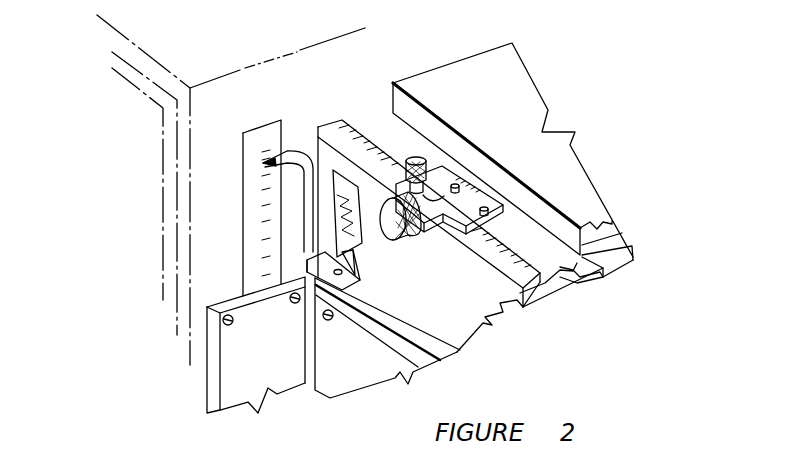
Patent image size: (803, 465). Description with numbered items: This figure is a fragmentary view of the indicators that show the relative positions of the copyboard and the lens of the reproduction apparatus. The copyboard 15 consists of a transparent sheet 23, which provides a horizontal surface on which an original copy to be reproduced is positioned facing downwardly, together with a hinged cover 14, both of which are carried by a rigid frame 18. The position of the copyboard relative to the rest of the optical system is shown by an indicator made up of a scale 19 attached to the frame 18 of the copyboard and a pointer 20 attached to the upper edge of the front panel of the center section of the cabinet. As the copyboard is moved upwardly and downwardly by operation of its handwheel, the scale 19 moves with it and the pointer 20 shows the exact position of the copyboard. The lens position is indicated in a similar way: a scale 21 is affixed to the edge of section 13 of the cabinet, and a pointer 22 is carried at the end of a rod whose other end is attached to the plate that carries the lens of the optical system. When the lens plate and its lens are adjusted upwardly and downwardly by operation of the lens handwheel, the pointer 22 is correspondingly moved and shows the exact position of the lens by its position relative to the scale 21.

The section of cabinet 13 is at (152, 160).
The hinged cover 14 is at (475, 72).
The copyboard 15 is at (547, 260).
The frame 18 is at (453, 310).
The scale 19 is at (363, 243).
The pointer 20 is at (355, 278).
The scale 21 is at (243, 195).
The pointer 22 is at (285, 152).
The transparent sheet 23 is at (620, 252).